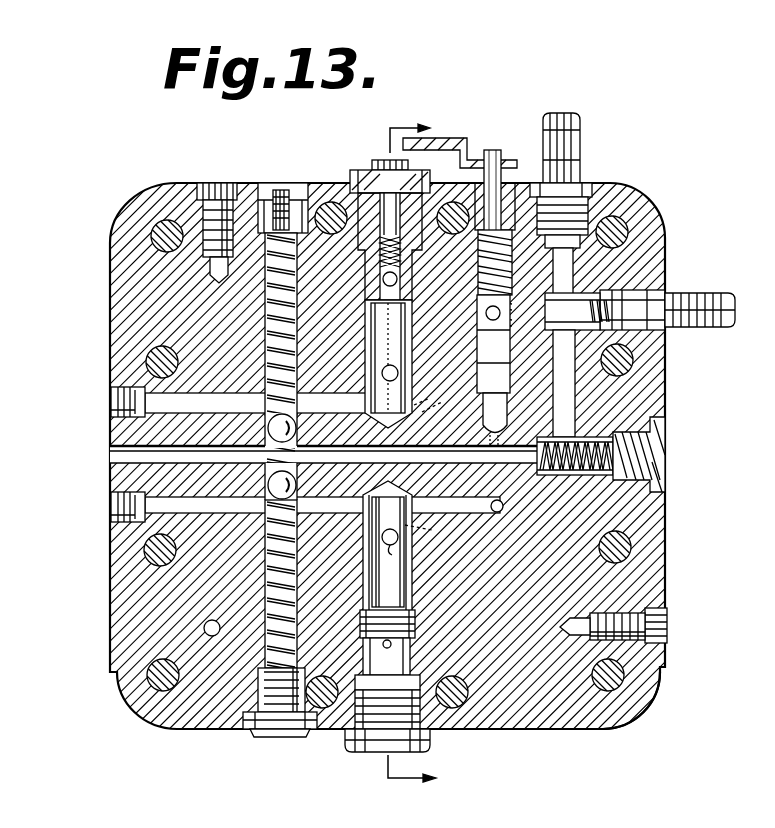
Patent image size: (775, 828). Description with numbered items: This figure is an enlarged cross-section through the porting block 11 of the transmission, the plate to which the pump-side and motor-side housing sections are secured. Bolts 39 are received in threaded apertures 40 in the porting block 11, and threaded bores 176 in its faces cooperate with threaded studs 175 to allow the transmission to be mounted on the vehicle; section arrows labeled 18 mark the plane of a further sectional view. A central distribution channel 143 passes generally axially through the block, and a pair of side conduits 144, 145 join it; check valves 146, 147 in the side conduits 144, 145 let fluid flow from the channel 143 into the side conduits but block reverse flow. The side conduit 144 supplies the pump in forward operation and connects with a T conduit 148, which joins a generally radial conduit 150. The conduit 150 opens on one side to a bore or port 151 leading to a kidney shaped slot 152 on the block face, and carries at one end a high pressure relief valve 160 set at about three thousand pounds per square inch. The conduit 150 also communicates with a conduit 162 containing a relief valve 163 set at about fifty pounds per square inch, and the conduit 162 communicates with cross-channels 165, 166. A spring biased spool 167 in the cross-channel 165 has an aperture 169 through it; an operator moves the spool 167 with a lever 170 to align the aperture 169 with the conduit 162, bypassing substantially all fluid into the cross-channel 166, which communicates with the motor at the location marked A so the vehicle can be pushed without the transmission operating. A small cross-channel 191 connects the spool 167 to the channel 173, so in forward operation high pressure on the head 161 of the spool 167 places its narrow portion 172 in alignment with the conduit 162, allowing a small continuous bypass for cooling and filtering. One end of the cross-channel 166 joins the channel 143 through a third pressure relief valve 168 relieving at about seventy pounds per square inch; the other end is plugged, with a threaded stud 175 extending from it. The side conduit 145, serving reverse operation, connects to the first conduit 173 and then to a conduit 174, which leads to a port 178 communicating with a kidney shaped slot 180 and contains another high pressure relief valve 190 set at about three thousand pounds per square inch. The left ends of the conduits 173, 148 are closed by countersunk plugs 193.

The porting block 11 is at (656, 216).
The section line for FIG. 18 is at (387, 452).
The bolts 39 is at (632, 684).
The threaded apertures 40 is at (594, 663).
The central distribution channel 143 is at (172, 447).
The side conduit 144 is at (266, 323).
The side conduit 145 is at (266, 573).
The check valve 146 is at (298, 426).
The check valve 147 is at (298, 482).
The T conduit 148 is at (248, 393).
The conduit 150 is at (366, 320).
The bore or port 151 is at (396, 373).
The kidney shaped slot 152 is at (443, 407).
The high pressure relief valve 160 is at (408, 268).
The head of the spool 161 is at (500, 417).
The conduit 162 is at (415, 293).
The relief valve 163 is at (556, 289).
The cross-channel 165 is at (506, 366).
The cross-channel 166 is at (568, 405).
The spring biased spool 167 is at (480, 360).
The third pressure relief valve 168 is at (597, 474).
The aperture 169 is at (502, 322).
The lever 170 is at (460, 140).
The narrow portion of the spool 172 is at (508, 400).
The first conduit 173 is at (190, 501).
The conduit 174 is at (370, 579).
The threaded stud 175 is at (582, 130).
The threaded bores 176 is at (224, 190).
The port 178 is at (398, 545).
The kidney shaped slot 180 is at (434, 532).
The high pressure relief valve 190 is at (414, 626).
The small cross-channel 191 is at (494, 480).
The countersunk plugs 193 is at (112, 400).
The communication location A is at (565, 345).